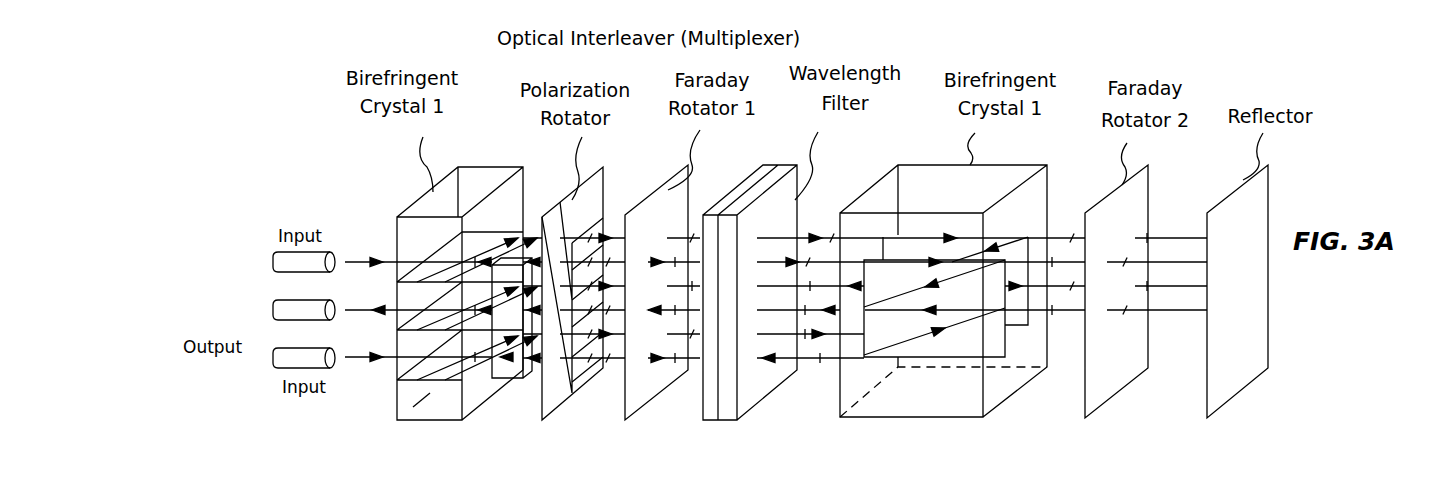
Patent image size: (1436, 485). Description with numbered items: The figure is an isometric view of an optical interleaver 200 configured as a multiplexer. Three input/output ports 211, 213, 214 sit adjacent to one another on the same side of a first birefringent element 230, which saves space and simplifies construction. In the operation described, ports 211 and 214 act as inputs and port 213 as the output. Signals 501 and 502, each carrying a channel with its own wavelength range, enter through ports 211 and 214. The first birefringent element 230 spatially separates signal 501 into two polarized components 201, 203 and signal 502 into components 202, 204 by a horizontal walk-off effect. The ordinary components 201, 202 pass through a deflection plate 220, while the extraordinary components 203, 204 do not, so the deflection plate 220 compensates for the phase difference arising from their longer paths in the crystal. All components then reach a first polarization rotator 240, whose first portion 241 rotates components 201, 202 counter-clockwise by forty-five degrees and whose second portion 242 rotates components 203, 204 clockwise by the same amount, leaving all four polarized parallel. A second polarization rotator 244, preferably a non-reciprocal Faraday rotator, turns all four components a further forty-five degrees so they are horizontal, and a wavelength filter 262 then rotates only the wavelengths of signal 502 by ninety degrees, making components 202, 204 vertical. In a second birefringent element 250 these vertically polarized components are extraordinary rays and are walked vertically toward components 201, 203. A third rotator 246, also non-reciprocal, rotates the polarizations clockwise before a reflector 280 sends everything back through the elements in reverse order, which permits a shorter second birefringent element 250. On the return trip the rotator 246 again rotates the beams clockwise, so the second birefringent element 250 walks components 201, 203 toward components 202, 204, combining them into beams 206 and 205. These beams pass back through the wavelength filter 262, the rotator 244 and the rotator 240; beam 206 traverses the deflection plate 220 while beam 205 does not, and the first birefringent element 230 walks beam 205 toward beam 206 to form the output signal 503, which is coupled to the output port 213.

The optical interleaver 200 is at (305, 125).
The ordinary polarized component 201 is at (478, 240).
The ordinary polarized component 202 is at (447, 372).
The extraordinary polarized component 203 is at (515, 230).
The extraordinary polarized component 204 is at (397, 380).
The combined beam 205 is at (807, 286).
The combined beam 206 is at (808, 308).
The input/output port 211 is at (272, 268).
The input/output port 213 is at (272, 318).
The input/output port 214 is at (275, 368).
The deflection plate 220 is at (490, 385).
The first birefringent element 230 is at (465, 400).
The first polarization rotator 240 is at (580, 392).
The first portion of rotator 241 is at (605, 192).
The second portion of rotator 242 is at (563, 393).
The second polarization rotator 244 is at (648, 401).
The third rotator 246 is at (1114, 394).
The second birefringent element 250 is at (908, 417).
The wavelength filter 262 is at (763, 402).
The reflector 280 is at (1242, 389).
The input signal 501 is at (366, 258).
The input signal 502 is at (371, 357).
The output signal 503 is at (370, 310).